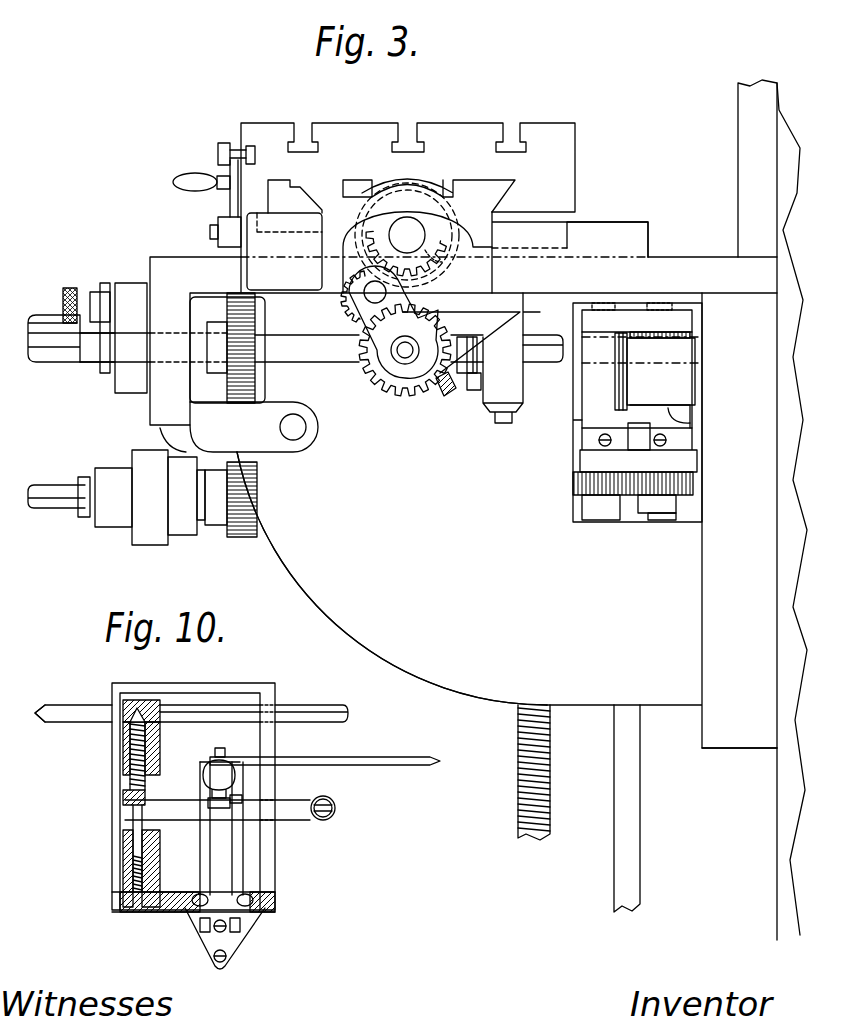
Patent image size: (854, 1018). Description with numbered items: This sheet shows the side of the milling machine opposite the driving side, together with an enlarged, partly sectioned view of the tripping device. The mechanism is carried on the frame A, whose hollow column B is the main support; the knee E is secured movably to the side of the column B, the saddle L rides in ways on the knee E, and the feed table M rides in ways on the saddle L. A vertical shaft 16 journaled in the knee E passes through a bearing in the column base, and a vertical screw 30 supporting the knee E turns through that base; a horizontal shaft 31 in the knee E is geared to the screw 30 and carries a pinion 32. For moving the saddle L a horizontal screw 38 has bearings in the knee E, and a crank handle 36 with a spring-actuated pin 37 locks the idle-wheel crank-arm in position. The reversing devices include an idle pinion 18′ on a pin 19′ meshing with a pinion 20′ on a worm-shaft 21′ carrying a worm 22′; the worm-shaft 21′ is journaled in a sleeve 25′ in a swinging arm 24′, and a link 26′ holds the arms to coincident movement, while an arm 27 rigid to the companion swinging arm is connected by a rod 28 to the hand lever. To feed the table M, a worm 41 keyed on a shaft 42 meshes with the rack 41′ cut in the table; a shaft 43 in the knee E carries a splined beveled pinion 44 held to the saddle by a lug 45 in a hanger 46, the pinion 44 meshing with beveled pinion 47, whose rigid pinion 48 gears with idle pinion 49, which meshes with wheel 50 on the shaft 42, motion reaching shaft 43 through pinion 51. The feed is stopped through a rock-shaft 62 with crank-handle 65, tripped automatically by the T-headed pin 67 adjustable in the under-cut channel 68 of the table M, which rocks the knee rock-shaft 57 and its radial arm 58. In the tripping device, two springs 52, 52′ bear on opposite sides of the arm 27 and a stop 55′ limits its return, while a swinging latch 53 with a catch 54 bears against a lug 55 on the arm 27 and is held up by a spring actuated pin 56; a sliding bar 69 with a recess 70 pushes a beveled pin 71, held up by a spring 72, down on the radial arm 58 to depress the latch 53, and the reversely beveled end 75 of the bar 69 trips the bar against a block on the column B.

In FIG. 3, the feed table M is at (560, 128).
In FIG. 3, the frame A is at (790, 170).
In FIG. 3, the saddle L is at (607, 239).
In FIG. 3, the knee E is at (392, 578).
In FIG. 3, the hollow column B is at (745, 835).
In FIG. 3, the shaft 42 is at (417, 238).
In FIG. 3, the worm 41 is at (420, 190).
In FIG. 3, the rack 41′ is at (393, 188).
In FIG. 3, the wheel 50 is at (432, 256).
In FIG. 3, the crank-handle 65 is at (229, 200).
In FIG. 3, the pin 67 is at (235, 150).
In FIG. 3, the under-cut channel 68 is at (251, 146).
In FIG. 3, the rock-shaft 62 is at (217, 233).
In FIG. 3, the screw 38 is at (40, 320).
In FIG. 3, the spring-actuated pin 37 is at (63, 296).
In FIG. 3, the crank handle 36 is at (122, 300).
In FIG. 3, the shaft 43 is at (45, 355).
In FIG. 3, the pinion 51 is at (255, 384).
In FIG. 3, the beveled pinion 47 is at (406, 388).
In FIG. 3, the pinion 48 is at (388, 382).
In FIG. 3, the idle pinion 49 is at (346, 298).
In FIG. 3, the hanger 46 is at (471, 358).
In FIG. 3, the lug 45 is at (471, 390).
In FIG. 3, the beveled pinion 44 is at (446, 396).
In FIG. 3, the rock-shaft 57 is at (578, 432).
In FIG. 3, the pin 19′ is at (602, 310).
In FIG. 3, the worm 22′ is at (667, 334).
In FIG. 3, the link 26′ is at (686, 386).
In FIG. 3, the swinging arm 24′ is at (682, 412).
In FIG. 3, the sleeve 25′ is at (692, 417).
In FIG. 3, the idle pinion 18′ is at (607, 495).
In FIG. 3, the worm-shaft 21′ is at (658, 520).
In FIG. 3, the pinion 20′ is at (667, 515).
In FIG. 3, the horizontal shaft 31 is at (40, 487).
In FIG. 3, the pinion 32 is at (247, 537).
In FIG. 3, the screw 30 is at (518, 776).
In FIG. 3, the shaft 16 is at (633, 792).
In FIG. 10, the sliding bar 69 is at (303, 705).
In FIG. 10, the end 75 is at (33, 730).
In FIG. 10, the recess 70 is at (158, 706).
In FIG. 10, the pin 71 is at (127, 735).
In FIG. 10, the spring 72 is at (123, 764).
In FIG. 10, the radial arm 58 is at (125, 802).
In FIG. 10, the swinging latch 53 is at (290, 820).
In FIG. 10, the spring actuated pin 56 is at (150, 850).
In FIG. 10, the spring 52 is at (200, 869).
In FIG. 10, the spring 52′ is at (245, 874).
In FIG. 10, the rod 28 is at (365, 765).
In FIG. 10, the arm 27 is at (222, 772).
In FIG. 10, the catch 54 is at (208, 802).
In FIG. 10, the lug 55 is at (206, 784).
In FIG. 10, the stop 55′ is at (242, 796).